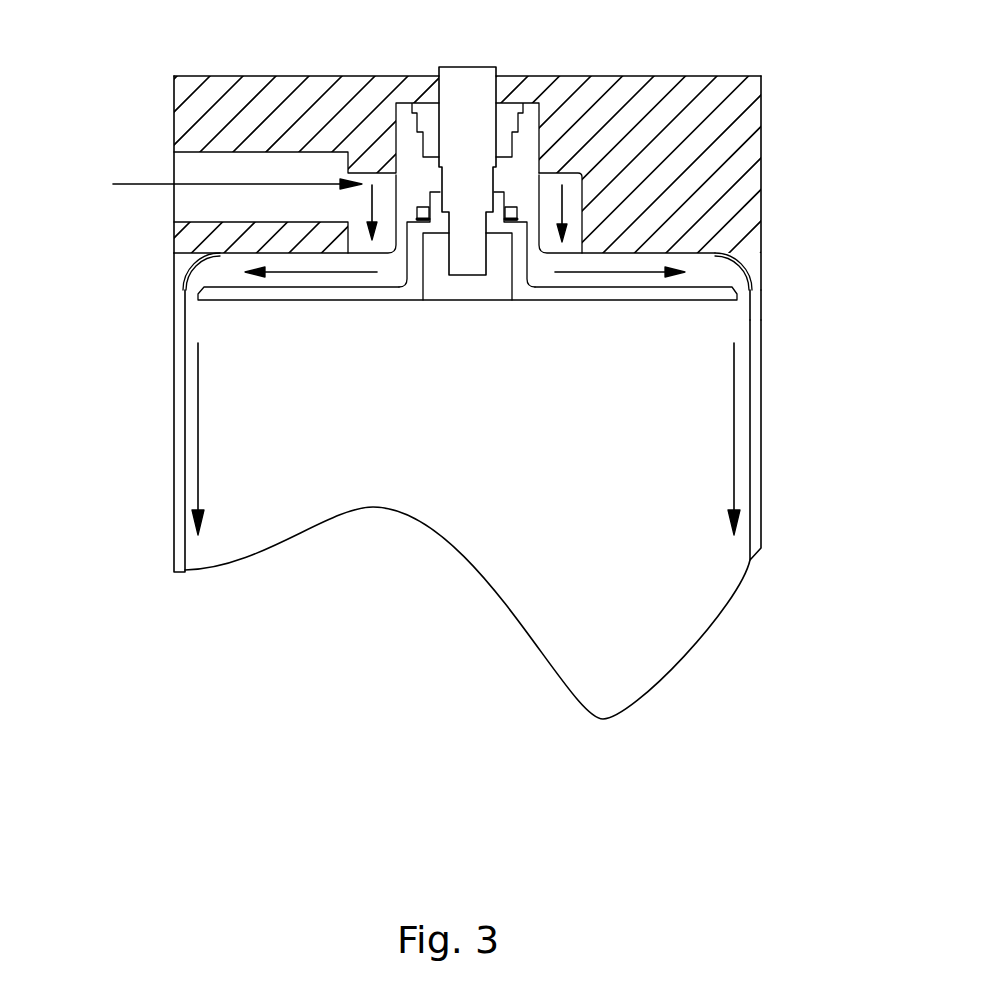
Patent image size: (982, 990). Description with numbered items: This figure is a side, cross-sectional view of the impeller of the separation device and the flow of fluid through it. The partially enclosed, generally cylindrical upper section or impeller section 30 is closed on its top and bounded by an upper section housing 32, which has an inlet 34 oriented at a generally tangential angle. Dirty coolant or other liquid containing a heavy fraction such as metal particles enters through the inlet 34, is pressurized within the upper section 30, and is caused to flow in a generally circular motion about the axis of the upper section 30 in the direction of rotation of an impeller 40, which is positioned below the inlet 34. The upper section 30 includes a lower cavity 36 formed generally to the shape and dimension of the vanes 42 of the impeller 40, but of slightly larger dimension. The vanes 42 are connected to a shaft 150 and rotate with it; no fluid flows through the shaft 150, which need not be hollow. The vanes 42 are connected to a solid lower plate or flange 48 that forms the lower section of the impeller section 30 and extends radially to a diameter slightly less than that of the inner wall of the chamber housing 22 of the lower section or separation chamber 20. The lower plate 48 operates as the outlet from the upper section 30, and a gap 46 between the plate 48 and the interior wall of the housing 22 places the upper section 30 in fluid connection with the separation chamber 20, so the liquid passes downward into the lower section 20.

The separation chamber 20 is at (764, 392).
The chamber housing 22 is at (174, 488).
The impeller section 30 is at (150, 100).
The upper section housing 32 is at (765, 131).
The inlet 34 is at (180, 165).
The lower cavity 36 is at (722, 248).
The impeller 40 is at (575, 252).
The vanes 42 is at (220, 274).
The gap 46 is at (193, 299).
The lower plate 48 is at (747, 293).
The shaft 150 is at (453, 257).